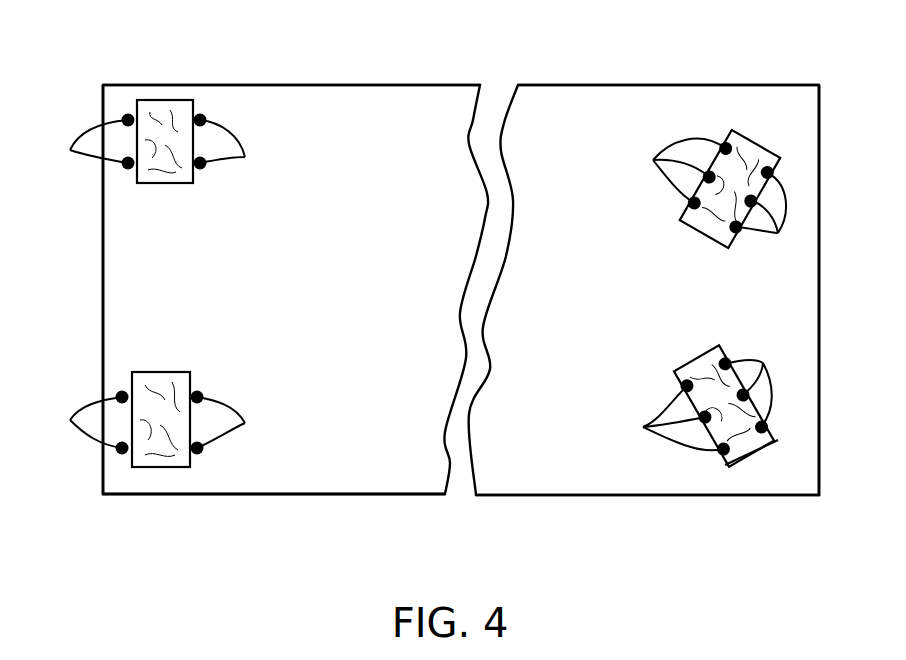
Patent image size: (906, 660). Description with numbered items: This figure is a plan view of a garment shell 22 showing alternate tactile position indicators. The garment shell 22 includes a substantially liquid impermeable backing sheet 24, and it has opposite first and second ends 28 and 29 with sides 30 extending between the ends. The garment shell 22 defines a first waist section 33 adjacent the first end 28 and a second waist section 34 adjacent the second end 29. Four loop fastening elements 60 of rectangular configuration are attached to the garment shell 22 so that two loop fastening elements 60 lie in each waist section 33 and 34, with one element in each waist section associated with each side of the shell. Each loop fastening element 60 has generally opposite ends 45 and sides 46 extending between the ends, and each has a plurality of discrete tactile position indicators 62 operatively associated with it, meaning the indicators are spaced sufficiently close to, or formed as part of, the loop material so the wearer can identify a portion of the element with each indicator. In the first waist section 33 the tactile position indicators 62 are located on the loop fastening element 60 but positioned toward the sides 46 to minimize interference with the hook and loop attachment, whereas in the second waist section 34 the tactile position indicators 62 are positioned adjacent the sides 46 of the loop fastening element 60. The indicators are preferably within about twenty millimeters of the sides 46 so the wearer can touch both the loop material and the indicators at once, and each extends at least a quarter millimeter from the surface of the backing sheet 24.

The garment shell 22 is at (343, 66).
The backing sheet 24 is at (382, 324).
The first end 28 is at (819, 310).
The second end 29 is at (103, 273).
The sides 30 is at (594, 85).
The first waist section 33 is at (610, 540).
The second waist section 34 is at (236, 534).
The ends 45 is at (150, 467).
The sides 46 is at (190, 374).
The loop fastening element 60 is at (152, 100).
The tactile position indicators 62 is at (414, 286).